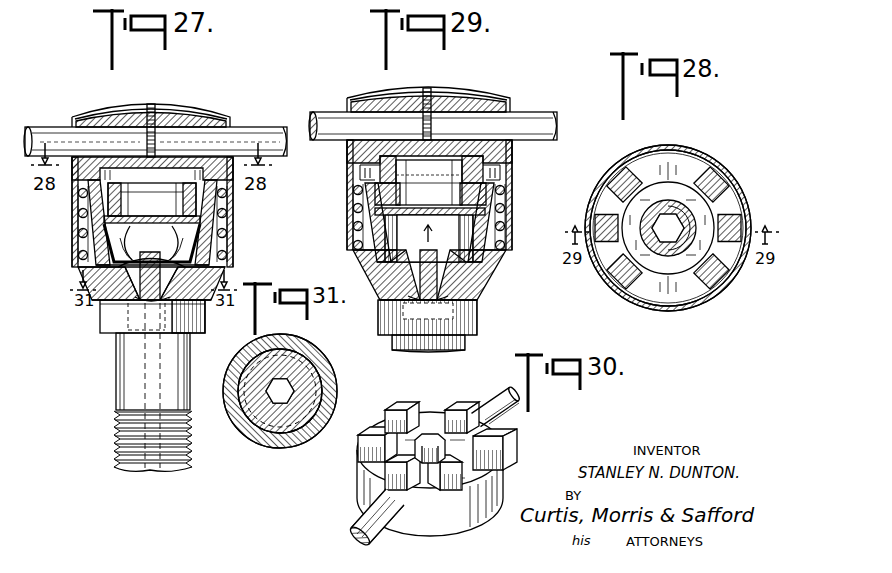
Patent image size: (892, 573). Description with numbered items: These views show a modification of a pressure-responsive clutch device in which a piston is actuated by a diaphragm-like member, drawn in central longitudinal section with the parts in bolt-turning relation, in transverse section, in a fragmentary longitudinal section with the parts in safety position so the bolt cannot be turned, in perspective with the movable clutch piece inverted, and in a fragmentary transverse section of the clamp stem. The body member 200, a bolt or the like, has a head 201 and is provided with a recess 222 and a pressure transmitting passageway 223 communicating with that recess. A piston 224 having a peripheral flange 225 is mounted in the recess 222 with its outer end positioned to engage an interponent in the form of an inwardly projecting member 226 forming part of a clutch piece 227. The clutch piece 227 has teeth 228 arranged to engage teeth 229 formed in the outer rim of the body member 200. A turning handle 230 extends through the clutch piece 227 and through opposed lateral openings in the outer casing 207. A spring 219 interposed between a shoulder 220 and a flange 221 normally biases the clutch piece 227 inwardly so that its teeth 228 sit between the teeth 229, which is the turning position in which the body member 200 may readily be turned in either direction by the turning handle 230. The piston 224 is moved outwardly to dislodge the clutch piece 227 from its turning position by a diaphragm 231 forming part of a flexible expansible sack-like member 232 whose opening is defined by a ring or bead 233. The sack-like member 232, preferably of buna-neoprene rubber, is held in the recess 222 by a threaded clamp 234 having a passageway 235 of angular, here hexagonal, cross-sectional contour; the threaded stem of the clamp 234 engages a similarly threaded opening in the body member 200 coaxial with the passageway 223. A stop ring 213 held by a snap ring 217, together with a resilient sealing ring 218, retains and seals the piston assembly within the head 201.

In FIG. 27, the body member 200 is at (118, 364).
In FIG. 27, the head 201 is at (105, 318).
In FIG. 31, the head 201 is at (286, 450).
In FIG. 29, the head 201 is at (478, 301).
In FIG. 27, the casing 207 is at (205, 220).
In FIG. 28, the casing 207 is at (647, 312).
In FIG. 29, the ring 213 is at (386, 182).
In FIG. 28, the ring 213 is at (695, 200).
In FIG. 29, the snap ring 217 is at (487, 177).
In FIG. 28, the snap ring 217 is at (700, 265).
In FIG. 29, the sealing ring 218 is at (484, 193).
In FIG. 27, the spring 219 is at (230, 256).
In FIG. 27, the shoulder 220 is at (228, 198).
In FIG. 27, the flange 221 is at (80, 262).
In FIG. 27, the recess 222 is at (203, 240).
In FIG. 27, the pressure transmitting passageway 223 is at (148, 470).
In FIG. 27, the piston 224 is at (135, 205).
In FIG. 29, the piston 224 is at (440, 170).
In FIG. 28, the piston 224 is at (682, 215).
In FIG. 27, the peripheral flange 225 is at (152, 232).
In FIG. 27, the inwardly projecting member 226 is at (150, 178).
In FIG. 29, the inwardly projecting member 226 is at (427, 160).
In FIG. 28, the inwardly projecting member 226 is at (655, 232).
In FIG. 30, the inwardly projecting member 226 is at (430, 434).
In FIG. 30, the clutch piece 227 is at (503, 490).
In FIG. 28, the teeth 228 is at (695, 162).
In FIG. 30, the teeth 228 is at (400, 410).
In FIG. 29, the teeth 229 is at (507, 167).
In FIG. 28, the teeth 229 is at (617, 193).
In FIG. 27, the turning handle 230 is at (45, 130).
In FIG. 29, the turning handle 230 is at (536, 124).
In FIG. 30, the turning handle 230 is at (498, 405).
In FIG. 29, the diaphragm 231 is at (377, 238).
In FIG. 29, the sack-like member 232 is at (393, 253).
In FIG. 29, the ring or bead 233 is at (487, 278).
In FIG. 27, the threaded clamp 234 is at (112, 264).
In FIG. 31, the threaded clamp 234 is at (300, 440).
In FIG. 29, the threaded clamp 234 is at (443, 270).
In FIG. 31, the passageway 235 is at (252, 430).
In FIG. 29, the passageway 235 is at (386, 290).